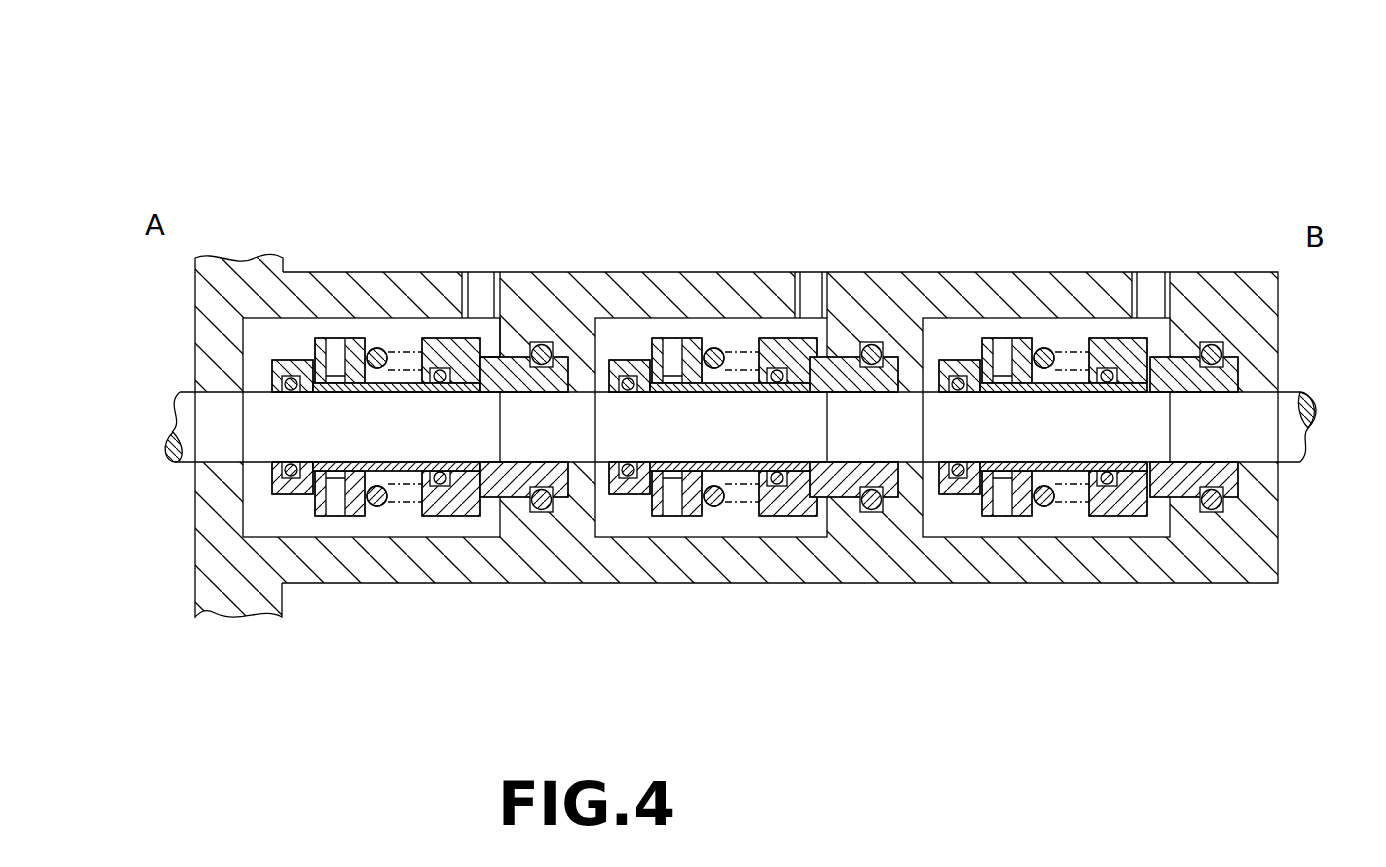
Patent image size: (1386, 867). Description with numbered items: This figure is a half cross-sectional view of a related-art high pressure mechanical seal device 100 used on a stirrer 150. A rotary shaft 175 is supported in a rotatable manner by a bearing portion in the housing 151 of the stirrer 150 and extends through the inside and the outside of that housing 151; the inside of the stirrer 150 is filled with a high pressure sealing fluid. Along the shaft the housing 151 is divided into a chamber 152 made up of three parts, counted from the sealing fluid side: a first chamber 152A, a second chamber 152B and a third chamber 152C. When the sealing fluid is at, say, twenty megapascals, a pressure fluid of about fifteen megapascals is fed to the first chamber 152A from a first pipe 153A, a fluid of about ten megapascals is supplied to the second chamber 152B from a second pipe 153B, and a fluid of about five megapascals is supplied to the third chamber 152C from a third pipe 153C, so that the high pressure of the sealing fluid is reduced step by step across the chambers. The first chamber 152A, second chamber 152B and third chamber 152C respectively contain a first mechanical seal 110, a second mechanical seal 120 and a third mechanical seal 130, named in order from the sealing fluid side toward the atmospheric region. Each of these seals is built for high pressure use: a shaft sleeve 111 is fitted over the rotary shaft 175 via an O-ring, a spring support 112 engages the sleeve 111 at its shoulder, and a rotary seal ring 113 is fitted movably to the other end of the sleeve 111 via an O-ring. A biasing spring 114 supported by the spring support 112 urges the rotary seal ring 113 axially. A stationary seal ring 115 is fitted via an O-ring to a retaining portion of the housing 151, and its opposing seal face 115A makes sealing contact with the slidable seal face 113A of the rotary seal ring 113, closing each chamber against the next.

The rotary machine / apparatus 100 is at (1272, 197).
The stirrer 150 is at (245, 177).
The housing 151 is at (207, 295).
The chamber 152 is at (941, 526).
The first chamber 152A is at (390, 328).
The second chamber 152B is at (680, 330).
The third chamber 152C is at (1000, 330).
The first pipe 153A is at (485, 275).
The second pipe 153B is at (812, 275).
The third pipe 153C is at (1150, 273).
The first mechanical seal 110 is at (385, 527).
The shaft sleeve 111 is at (287, 493).
The spring support 112 is at (323, 513).
The rotary seal ring 113 is at (447, 507).
The slidable seal face 113A is at (480, 472).
The biasing spring 114 is at (370, 343).
The stationary seal ring 115 is at (518, 512).
The seat gap 115A is at (475, 342).
The second mechanical seal 120 is at (730, 527).
The third mechanical seal 130 is at (1060, 526).
The rotary shaft 175 is at (1280, 400).